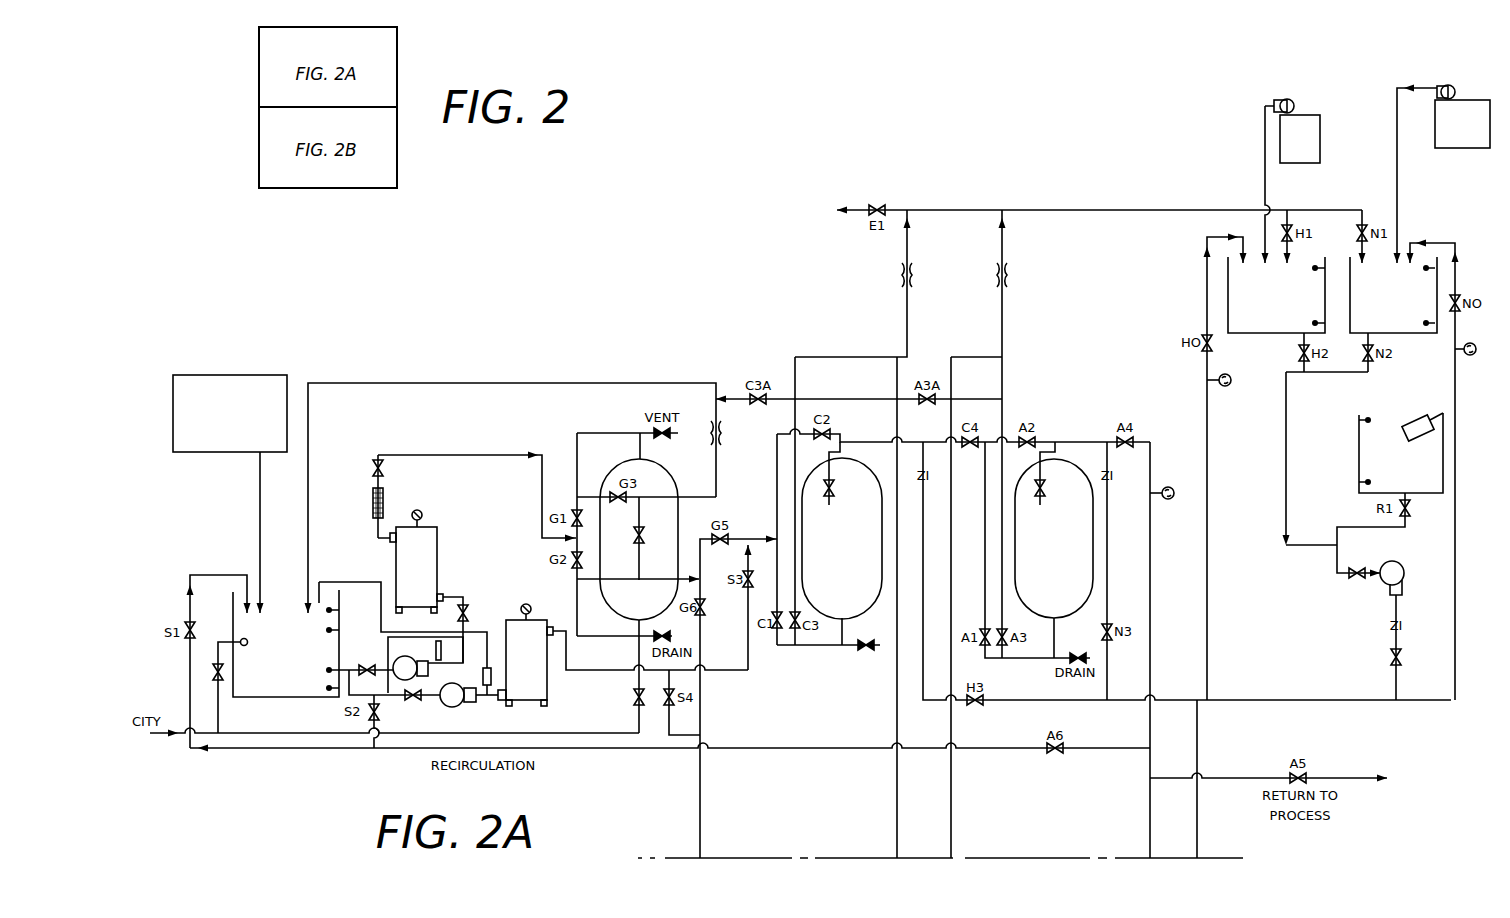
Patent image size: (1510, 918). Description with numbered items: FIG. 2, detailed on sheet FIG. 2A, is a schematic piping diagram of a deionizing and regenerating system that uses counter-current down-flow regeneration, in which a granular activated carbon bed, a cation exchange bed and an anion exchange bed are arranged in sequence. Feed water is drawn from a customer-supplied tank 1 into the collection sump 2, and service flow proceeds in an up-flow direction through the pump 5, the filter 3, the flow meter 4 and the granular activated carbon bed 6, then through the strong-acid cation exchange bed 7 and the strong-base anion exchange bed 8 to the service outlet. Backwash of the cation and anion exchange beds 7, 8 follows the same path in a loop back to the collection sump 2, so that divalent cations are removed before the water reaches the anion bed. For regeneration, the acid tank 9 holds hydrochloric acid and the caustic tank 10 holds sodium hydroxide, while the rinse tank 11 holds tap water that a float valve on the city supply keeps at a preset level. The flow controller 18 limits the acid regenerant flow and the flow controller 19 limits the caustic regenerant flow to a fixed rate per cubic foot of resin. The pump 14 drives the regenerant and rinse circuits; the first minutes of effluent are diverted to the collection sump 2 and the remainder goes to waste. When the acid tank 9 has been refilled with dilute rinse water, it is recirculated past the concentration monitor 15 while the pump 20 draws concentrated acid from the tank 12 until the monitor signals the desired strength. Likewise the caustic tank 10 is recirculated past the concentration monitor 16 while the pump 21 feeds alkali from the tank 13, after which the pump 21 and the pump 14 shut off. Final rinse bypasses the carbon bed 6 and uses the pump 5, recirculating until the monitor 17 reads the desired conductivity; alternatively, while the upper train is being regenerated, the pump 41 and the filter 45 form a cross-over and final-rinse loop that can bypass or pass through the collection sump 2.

The customer tank 1 is at (256, 375).
The collection sump 2 is at (245, 699).
The filter 3 is at (436, 529).
The flow meter 4 is at (372, 498).
The pump 5 is at (398, 678).
The granular activated carbon bed 6 is at (622, 470).
The cation exchange bed 7 is at (832, 638).
The anion exchange bed 8 is at (1062, 470).
The acid tank 9 is at (1228, 305).
The caustic tank 10 is at (1437, 270).
The rinse tank 11 is at (1359, 460).
The tank 12 is at (1320, 148).
The tank 13 is at (1476, 100).
The pump 14 is at (1388, 561).
The concentration monitor 15 is at (1220, 376).
The concentration monitor 16 is at (1462, 346).
The monitor 17 is at (1166, 500).
The flow controller 18 is at (900, 268).
The flow controller 19 is at (1007, 262).
The pump 20 is at (1296, 102).
The pump 21 is at (1440, 88).
The pump 41 is at (452, 707).
The filter 45 is at (547, 688).